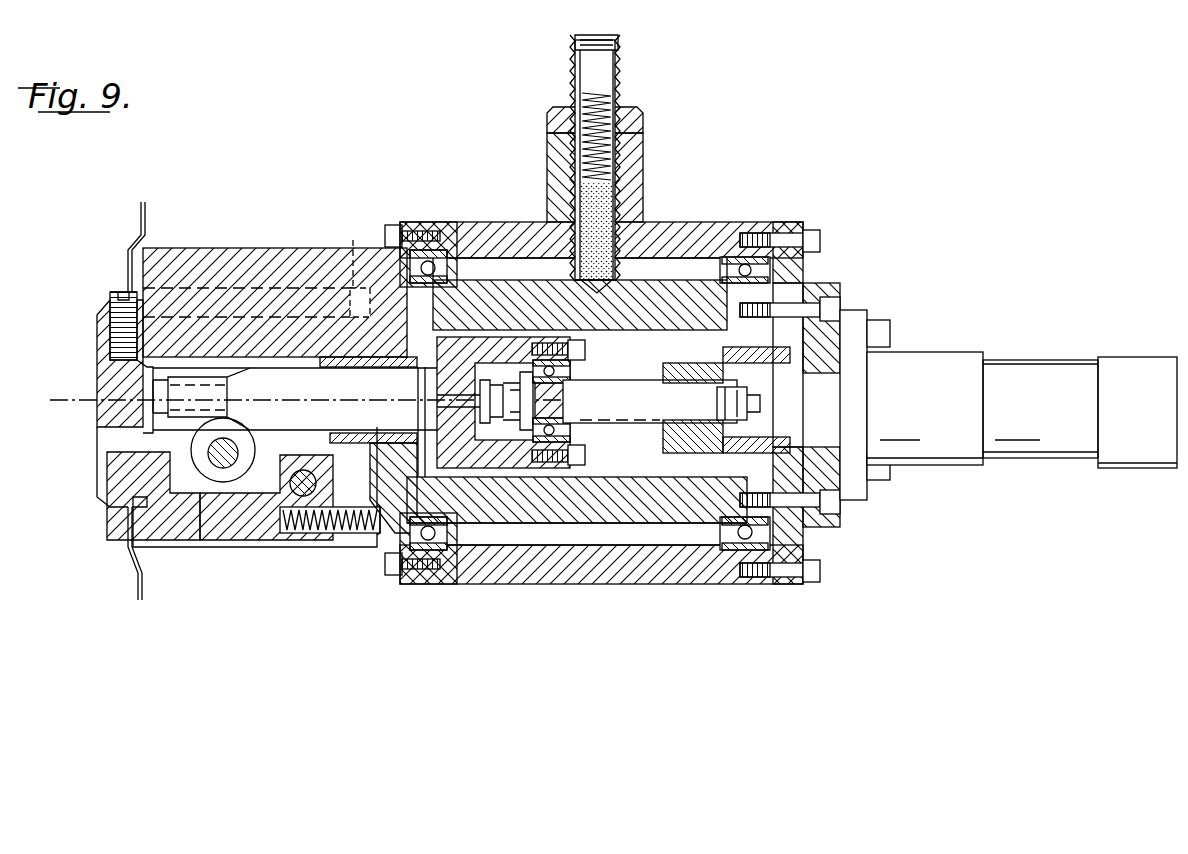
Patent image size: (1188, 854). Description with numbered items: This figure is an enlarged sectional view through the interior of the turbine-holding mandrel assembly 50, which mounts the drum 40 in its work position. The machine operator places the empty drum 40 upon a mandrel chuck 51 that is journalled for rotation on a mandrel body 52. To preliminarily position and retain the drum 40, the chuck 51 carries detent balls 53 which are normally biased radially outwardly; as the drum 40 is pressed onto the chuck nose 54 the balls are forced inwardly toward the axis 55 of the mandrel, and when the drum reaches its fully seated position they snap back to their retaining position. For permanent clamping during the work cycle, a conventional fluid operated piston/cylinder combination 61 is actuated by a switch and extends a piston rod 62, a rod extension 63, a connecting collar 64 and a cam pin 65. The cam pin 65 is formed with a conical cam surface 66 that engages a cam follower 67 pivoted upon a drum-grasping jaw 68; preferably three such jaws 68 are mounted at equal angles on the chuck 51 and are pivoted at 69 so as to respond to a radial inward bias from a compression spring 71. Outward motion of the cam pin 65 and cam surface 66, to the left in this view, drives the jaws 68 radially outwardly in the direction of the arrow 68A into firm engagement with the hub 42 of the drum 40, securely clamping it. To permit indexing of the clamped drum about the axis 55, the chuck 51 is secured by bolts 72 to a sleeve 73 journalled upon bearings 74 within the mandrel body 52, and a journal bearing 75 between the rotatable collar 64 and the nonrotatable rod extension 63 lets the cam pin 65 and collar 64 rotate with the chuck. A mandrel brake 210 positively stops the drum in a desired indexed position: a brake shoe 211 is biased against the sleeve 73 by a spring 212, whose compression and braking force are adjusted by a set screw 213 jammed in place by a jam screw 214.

The drum 40 is at (143, 203).
The hub 42 is at (128, 283).
The mandrel assembly 50 is at (389, 167).
The mandrel chuck 51 is at (256, 258).
The mandrel body 52 is at (693, 230).
The detent balls 53 is at (122, 290).
The chuck nose 54 is at (97, 330).
The axis 55 is at (67, 396).
The piston/cylinder combination 61 is at (1045, 421).
The piston rod 62 is at (810, 407).
The rod extension 63 is at (640, 414).
The connecting collar 64 is at (497, 462).
The cam pin 65 is at (358, 407).
The conical cam surface 66 is at (237, 373).
The cam follower 67 is at (223, 468).
The drum-grasping jaw 68 is at (228, 542).
The arrow 68A is at (118, 482).
The pivot 69 is at (310, 473).
The compression spring 71 is at (343, 534).
The bolts 72 is at (353, 240).
The sleeve 73 is at (505, 324).
The bearings 74 is at (447, 260).
The journal bearing 75 is at (573, 370).
The mandrel brake 210 is at (663, 113).
The brake shoe 211 is at (593, 293).
The spring 212 is at (580, 107).
The set screw 213 is at (620, 70).
The jam screw 214 is at (610, 33).